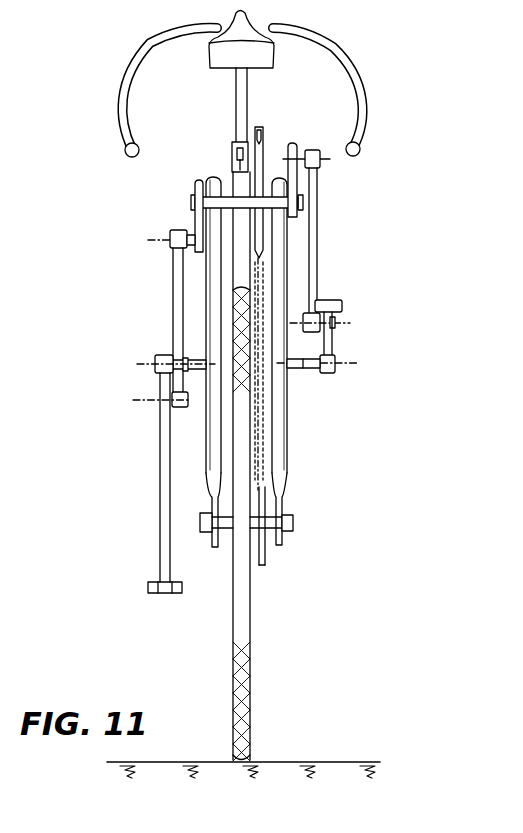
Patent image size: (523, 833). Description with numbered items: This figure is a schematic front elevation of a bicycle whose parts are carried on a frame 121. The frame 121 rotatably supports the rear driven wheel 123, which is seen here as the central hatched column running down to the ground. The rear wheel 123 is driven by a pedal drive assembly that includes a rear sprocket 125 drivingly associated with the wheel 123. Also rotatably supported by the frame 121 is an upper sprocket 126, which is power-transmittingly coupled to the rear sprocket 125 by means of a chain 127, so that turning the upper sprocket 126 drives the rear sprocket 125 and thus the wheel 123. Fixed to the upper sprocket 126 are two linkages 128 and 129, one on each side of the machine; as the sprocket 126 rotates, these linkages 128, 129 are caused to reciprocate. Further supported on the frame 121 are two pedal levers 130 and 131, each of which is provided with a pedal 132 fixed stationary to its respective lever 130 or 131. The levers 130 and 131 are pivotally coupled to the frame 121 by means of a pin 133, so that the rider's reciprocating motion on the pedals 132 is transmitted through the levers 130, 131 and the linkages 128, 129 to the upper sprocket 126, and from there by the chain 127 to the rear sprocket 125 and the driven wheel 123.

The frame 121 is at (236, 172).
The rear driven wheel 123 is at (243, 697).
The rear sprocket 125 is at (265, 553).
The upper sprocket 126 is at (261, 153).
The chain 127 is at (262, 453).
The linkage 128 is at (313, 242).
The linkage 129 is at (176, 302).
The pedal lever 130 is at (330, 343).
The pedal lever 131 is at (163, 478).
The pedal 132 is at (328, 300).
The pin 133 is at (305, 372).